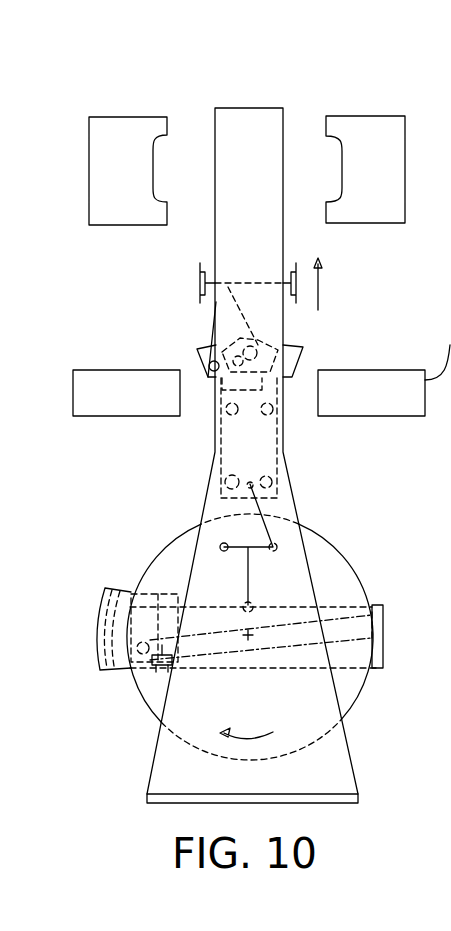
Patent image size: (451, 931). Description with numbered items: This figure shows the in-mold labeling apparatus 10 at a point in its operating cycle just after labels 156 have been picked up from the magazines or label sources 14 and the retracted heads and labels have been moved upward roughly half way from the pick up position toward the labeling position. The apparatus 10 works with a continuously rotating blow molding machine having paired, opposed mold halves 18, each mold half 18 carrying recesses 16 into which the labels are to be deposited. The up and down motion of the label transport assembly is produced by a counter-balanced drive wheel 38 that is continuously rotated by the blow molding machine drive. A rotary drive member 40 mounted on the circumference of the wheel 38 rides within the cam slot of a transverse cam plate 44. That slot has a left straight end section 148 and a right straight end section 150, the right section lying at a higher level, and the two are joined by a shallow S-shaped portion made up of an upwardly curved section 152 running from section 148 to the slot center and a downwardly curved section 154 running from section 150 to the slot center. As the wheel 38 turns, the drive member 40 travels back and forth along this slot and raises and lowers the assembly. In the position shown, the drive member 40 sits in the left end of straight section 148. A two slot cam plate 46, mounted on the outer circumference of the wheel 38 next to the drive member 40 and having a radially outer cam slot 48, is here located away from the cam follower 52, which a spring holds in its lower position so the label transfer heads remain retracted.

The in-mold labeling apparatus 10 is at (133, 738).
The magazines or label sources 14 is at (118, 370).
The recesses 16 is at (328, 143).
The mold halves 18 is at (122, 116).
The drive wheel 38 is at (335, 548).
The rotary drive member 40 is at (135, 695).
The transverse cam plate 44 is at (383, 610).
The two slot cam plate 46 is at (122, 592).
The cam slot 48 is at (107, 627).
The cam follower 52 is at (255, 605).
The straight end section 148 is at (168, 670).
The straight end section 150 is at (347, 623).
The upwardly curved section 152 is at (220, 648).
The downwardly curved section 154 is at (287, 635).
The labels 156 is at (200, 262).